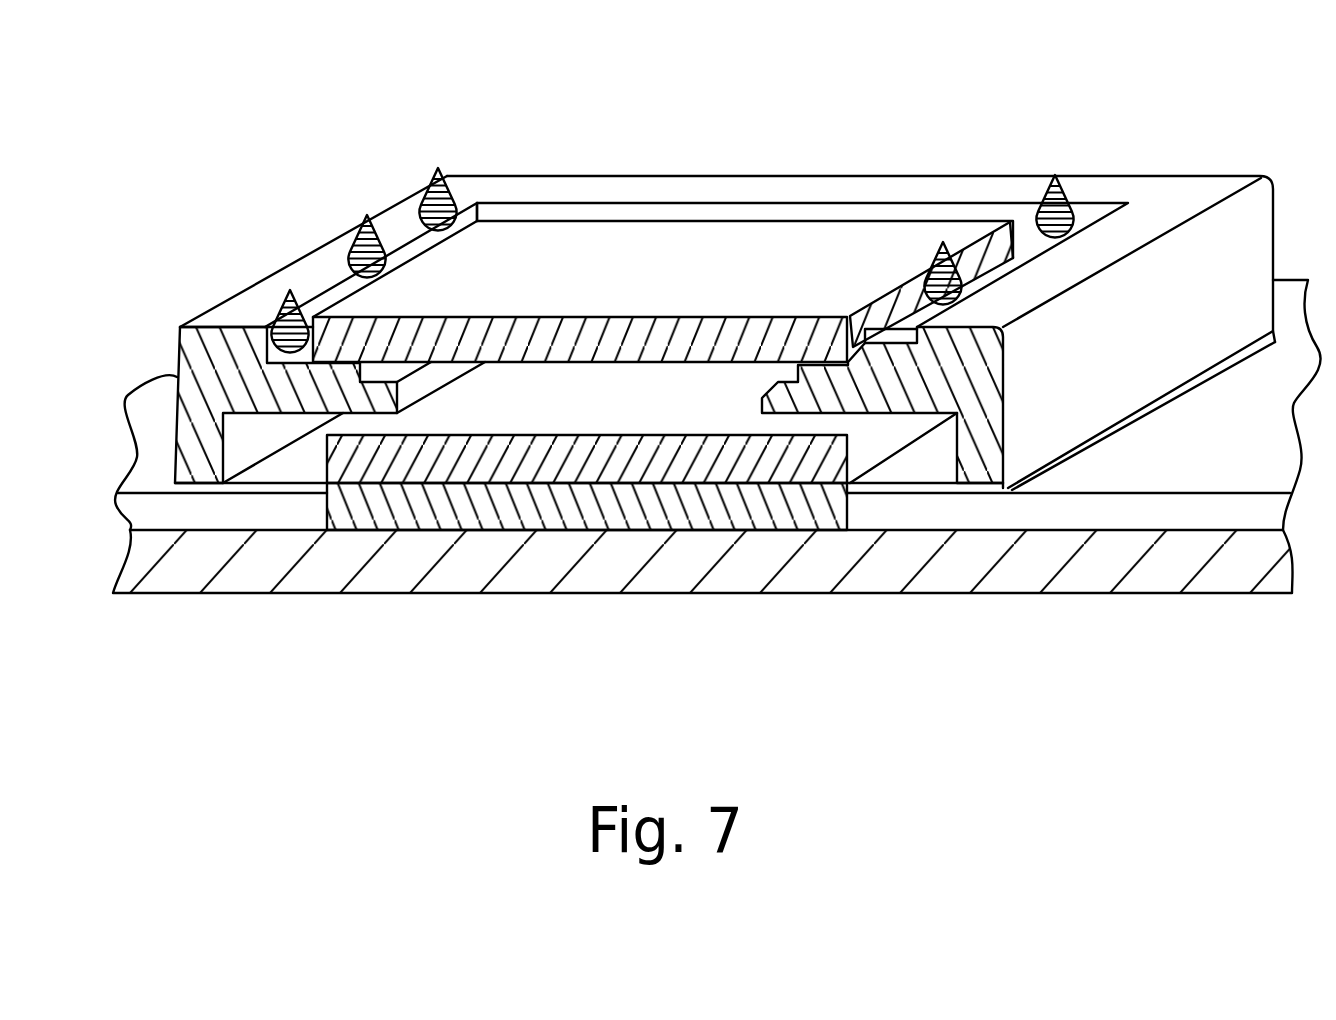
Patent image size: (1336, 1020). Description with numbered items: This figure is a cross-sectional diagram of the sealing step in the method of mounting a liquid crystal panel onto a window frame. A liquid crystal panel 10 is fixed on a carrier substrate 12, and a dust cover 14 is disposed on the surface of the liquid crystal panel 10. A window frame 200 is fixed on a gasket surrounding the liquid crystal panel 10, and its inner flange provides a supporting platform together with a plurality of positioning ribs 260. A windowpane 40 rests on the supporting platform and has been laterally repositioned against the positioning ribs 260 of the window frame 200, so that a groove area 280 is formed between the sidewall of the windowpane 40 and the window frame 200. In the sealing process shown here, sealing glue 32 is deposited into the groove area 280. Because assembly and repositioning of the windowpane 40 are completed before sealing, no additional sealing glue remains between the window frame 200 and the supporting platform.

The window frame 200 is at (190, 343).
The carrier substrate 12 is at (755, 570).
The liquid crystal panel 10 is at (537, 507).
The dust cover 14 is at (603, 457).
The windowpane 40 is at (675, 245).
The positioning ribs 260 is at (882, 337).
The groove area 280 is at (476, 182).
The sealing glue 32 is at (352, 241).